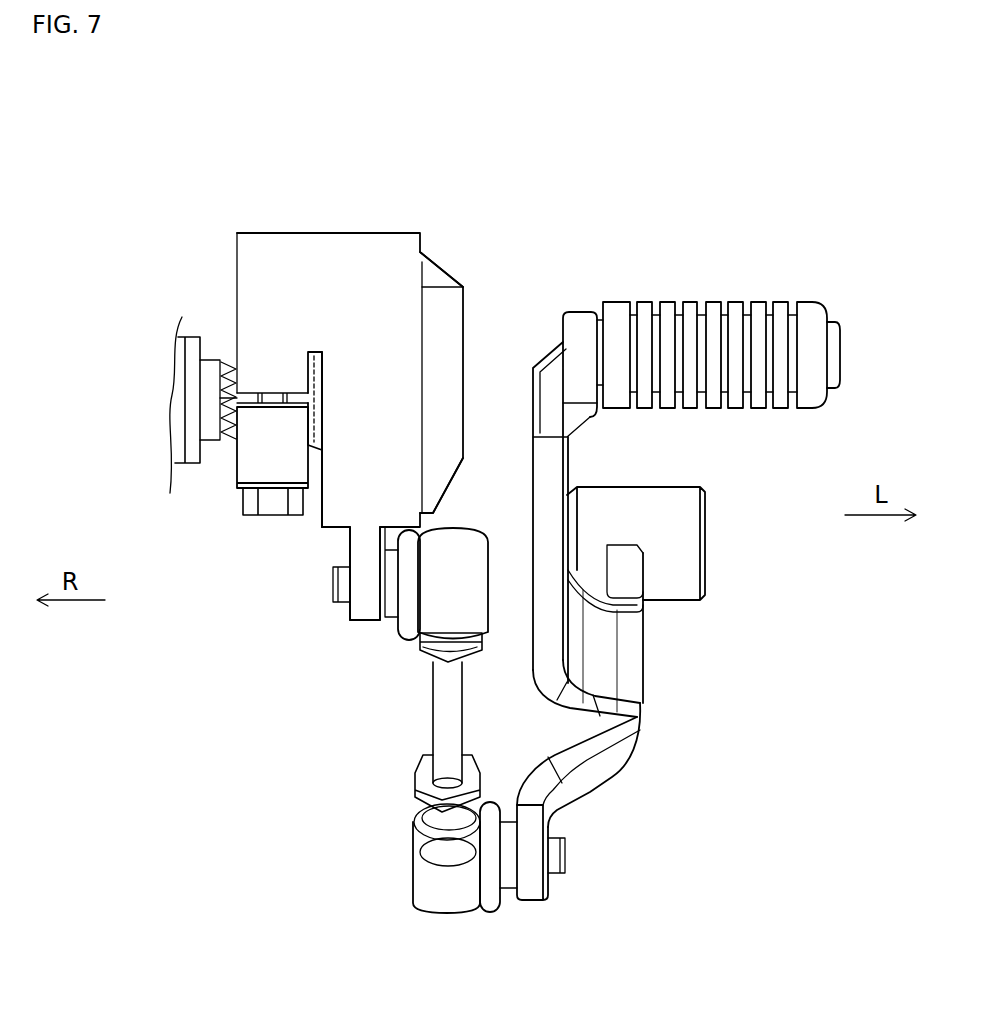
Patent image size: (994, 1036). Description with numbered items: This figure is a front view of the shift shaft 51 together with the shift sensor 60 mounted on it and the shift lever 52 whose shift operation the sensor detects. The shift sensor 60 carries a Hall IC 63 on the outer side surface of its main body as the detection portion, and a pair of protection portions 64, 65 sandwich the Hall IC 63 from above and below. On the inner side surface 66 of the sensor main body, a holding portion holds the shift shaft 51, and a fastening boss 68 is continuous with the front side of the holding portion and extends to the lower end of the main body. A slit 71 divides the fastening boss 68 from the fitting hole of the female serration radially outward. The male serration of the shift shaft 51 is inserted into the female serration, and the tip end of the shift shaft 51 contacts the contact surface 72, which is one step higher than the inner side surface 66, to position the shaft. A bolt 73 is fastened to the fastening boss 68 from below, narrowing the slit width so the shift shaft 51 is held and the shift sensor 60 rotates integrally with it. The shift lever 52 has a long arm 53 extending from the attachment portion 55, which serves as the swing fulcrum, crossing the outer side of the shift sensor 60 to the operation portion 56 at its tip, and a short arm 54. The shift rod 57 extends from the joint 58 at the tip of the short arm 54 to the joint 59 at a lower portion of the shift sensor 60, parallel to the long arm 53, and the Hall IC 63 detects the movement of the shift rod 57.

The shift shaft 51 is at (208, 367).
The shift lever 52 is at (643, 680).
The long arm 53 is at (553, 480).
The short arm 54 is at (600, 783).
The attachment portion 55 is at (703, 533).
The operation portion 56 is at (733, 302).
The shift rod 57 is at (442, 700).
The joint 58 is at (427, 892).
The joint 59 is at (427, 613).
The shift sensor 60 is at (394, 358).
The Hall IC 63 is at (465, 320).
The protection portion 64 is at (443, 260).
The protection portion 65 is at (443, 497).
The inner side surface 66 is at (320, 513).
The fastening boss 68 is at (247, 450).
The slit 71 is at (272, 393).
The contact surface 72 is at (310, 432).
The bolt 73 is at (273, 518).